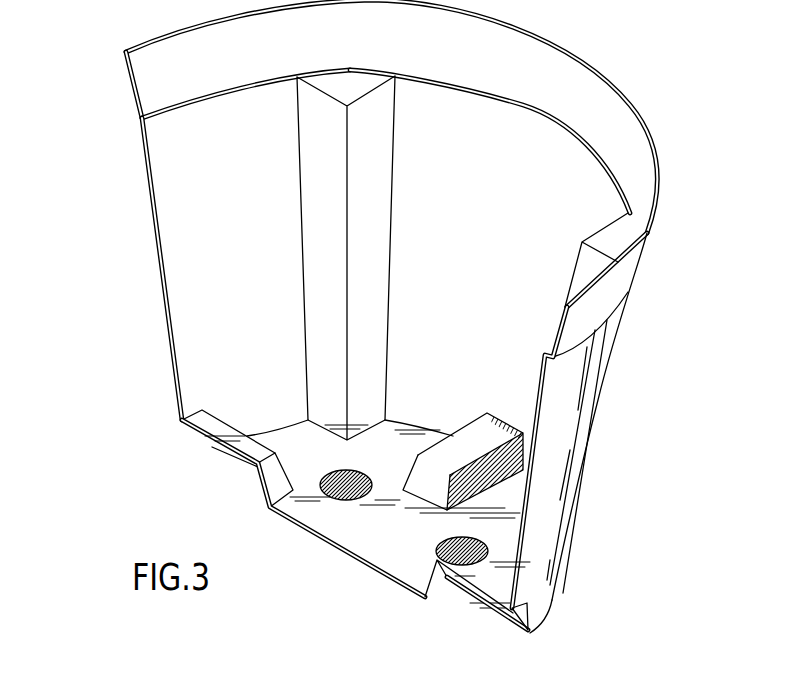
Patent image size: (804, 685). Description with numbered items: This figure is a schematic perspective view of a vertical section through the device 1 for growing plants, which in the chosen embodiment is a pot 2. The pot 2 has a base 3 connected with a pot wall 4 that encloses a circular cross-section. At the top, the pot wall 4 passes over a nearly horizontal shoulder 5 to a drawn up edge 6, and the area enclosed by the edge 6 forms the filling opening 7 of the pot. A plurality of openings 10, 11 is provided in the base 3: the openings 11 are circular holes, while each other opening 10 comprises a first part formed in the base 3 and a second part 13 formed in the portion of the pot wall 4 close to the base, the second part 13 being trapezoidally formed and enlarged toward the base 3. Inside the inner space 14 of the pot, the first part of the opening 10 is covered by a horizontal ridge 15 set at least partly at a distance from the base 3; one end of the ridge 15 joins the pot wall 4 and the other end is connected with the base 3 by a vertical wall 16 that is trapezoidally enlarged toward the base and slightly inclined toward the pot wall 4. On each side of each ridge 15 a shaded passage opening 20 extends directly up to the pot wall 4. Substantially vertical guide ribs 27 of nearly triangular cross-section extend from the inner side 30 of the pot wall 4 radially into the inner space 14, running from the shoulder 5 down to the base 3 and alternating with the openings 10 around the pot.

The device 1 is at (100, 240).
The pot 2 is at (572, 380).
The base 3 is at (388, 540).
The pot wall 4 is at (456, 265).
The shoulder 5 is at (523, 104).
The drawn up edge 6 is at (612, 108).
The filling opening 7 is at (155, 77).
The opening 10 is at (514, 457).
The opening 11 is at (325, 492).
The second part of the opening 13 is at (535, 625).
The inner space 14 is at (191, 292).
The ridge 15 is at (213, 407).
The vertical wall 16 is at (270, 482).
The passage opening 20 is at (480, 482).
The guide rib 27 is at (312, 225).
The inner side 30 is at (220, 127).